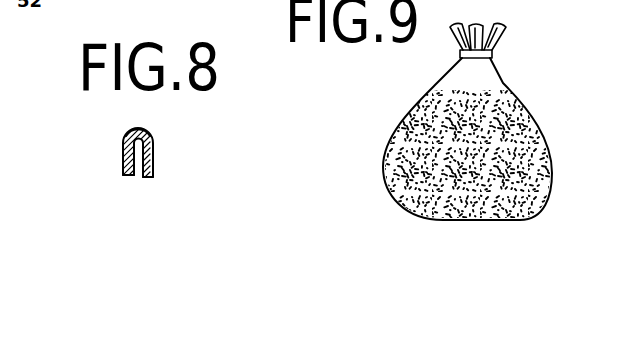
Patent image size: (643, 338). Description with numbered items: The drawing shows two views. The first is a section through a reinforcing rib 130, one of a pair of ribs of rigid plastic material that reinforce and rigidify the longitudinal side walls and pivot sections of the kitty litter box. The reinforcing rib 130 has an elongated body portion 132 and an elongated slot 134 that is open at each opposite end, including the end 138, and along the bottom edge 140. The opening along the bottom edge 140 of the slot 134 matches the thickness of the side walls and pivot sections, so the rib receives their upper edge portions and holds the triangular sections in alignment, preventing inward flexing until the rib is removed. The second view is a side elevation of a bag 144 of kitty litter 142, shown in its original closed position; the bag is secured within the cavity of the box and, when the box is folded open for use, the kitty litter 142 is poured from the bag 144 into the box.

In FIG. 8, the reinforcing rib 130 is at (151, 147).
In FIG. 8, the elongated body portion 132 is at (145, 133).
In FIG. 8, the elongated slot 134 is at (137, 172).
In FIG. 8, the end of slot 138 is at (123, 155).
In FIG. 8, the bottom edge 140 is at (151, 180).
In FIG. 9, the kitty litter 142 is at (530, 143).
In FIG. 9, the bag 144 is at (435, 78).